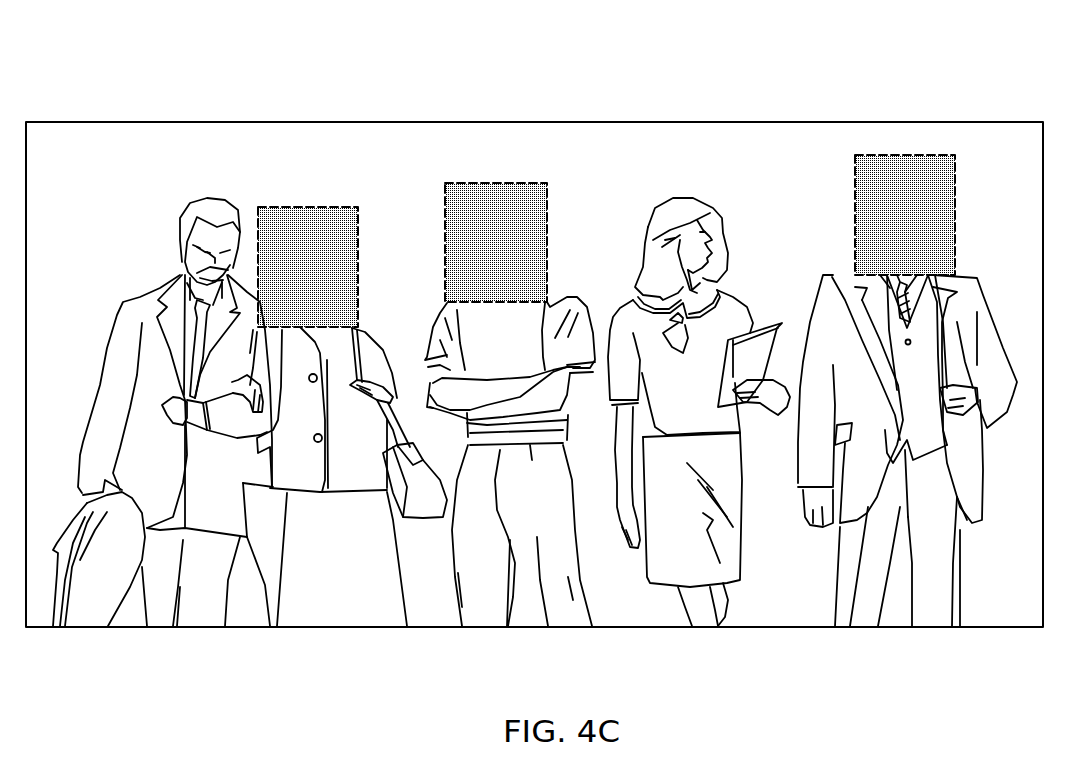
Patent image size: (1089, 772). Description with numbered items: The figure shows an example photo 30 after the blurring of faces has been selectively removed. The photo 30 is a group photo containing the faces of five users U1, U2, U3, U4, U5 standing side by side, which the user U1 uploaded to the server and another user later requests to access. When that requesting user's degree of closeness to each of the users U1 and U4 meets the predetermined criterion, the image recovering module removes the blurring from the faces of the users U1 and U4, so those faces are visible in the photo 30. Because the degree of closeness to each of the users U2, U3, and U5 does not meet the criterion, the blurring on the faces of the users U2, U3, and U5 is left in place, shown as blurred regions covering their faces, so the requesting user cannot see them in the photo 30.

The photo 30 is at (932, 68).
The user U1 is at (160, 628).
The user U2 is at (345, 628).
The user U3 is at (485, 628).
The user U4 is at (706, 628).
The user U5 is at (865, 628).